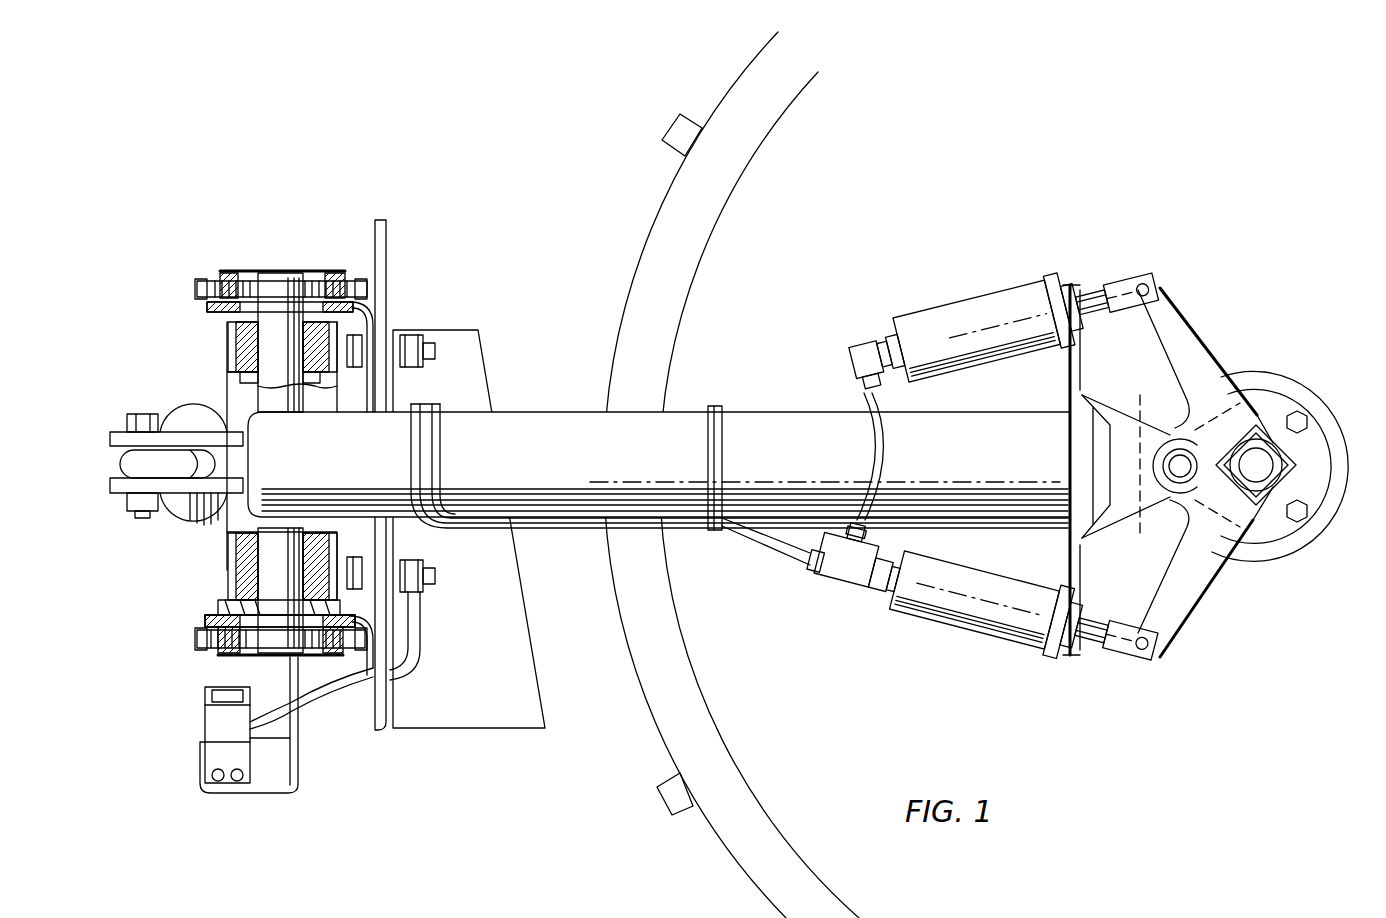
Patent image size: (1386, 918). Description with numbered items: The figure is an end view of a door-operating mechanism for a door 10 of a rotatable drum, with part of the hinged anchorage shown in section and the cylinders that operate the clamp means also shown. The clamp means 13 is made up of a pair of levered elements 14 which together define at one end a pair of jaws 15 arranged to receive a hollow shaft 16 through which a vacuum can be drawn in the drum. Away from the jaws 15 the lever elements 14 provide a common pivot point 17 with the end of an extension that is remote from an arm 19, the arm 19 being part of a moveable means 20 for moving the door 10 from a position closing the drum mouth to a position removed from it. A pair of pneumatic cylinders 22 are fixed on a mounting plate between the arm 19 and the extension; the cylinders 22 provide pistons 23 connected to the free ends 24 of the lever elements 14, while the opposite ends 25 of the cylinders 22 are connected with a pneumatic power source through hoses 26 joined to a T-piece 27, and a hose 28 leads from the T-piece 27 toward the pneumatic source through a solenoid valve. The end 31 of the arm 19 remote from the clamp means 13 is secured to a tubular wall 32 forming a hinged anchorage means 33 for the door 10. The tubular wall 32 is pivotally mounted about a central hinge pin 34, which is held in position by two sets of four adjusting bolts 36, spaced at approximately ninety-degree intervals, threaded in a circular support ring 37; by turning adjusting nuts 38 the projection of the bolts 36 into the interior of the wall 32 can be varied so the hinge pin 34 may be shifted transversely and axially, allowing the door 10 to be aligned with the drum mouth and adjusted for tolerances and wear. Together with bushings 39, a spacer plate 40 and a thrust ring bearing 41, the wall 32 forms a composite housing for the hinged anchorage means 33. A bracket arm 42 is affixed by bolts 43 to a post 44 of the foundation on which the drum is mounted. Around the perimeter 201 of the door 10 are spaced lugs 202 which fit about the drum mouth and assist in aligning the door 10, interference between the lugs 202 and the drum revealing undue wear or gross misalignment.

The door 10 is at (884, 198).
The clamp means 13 is at (1217, 336).
The levered elements 14 is at (1242, 363).
The jaws 15 is at (1300, 478).
The hollow shaft 16 is at (1262, 448).
The common pivot point 17 is at (1178, 470).
The arm 19 is at (797, 408).
The moveable means 20 is at (532, 406).
The pneumatic cylinders 22 is at (946, 316).
The pistons 23 is at (1082, 294).
The free ends 24 is at (1170, 302).
The opposite ends 25 is at (885, 340).
The hoses 26 is at (872, 600).
The T-piece 27 is at (842, 586).
The hose 28 is at (580, 528).
The end of arm 31 is at (250, 415).
The tubular wall 32 is at (232, 508).
The hinged anchorage means 33 is at (296, 262).
The hinge pin 34 is at (282, 275).
The adjusting bolts 36 is at (216, 282).
The circular support ring 37 is at (215, 306).
The adjusting nuts 38 is at (346, 276).
The bushings 39 is at (228, 345).
The spacer plate 40 is at (222, 606).
The thrust ring bearing 41 is at (210, 620).
The bracket arm 42 is at (385, 325).
The bolts 43 is at (430, 340).
The post 44 is at (386, 724).
The perimeter 201 is at (748, 66).
The lugs 202 is at (668, 126).